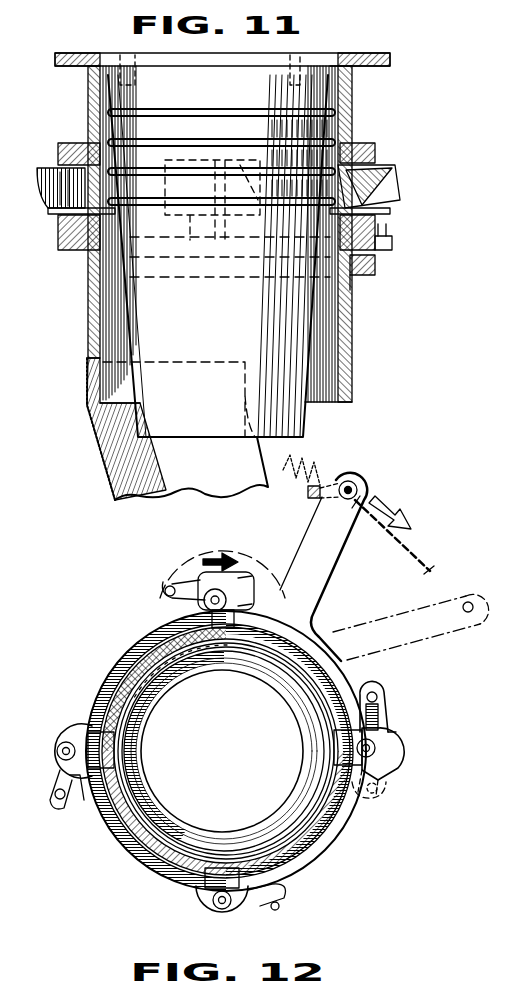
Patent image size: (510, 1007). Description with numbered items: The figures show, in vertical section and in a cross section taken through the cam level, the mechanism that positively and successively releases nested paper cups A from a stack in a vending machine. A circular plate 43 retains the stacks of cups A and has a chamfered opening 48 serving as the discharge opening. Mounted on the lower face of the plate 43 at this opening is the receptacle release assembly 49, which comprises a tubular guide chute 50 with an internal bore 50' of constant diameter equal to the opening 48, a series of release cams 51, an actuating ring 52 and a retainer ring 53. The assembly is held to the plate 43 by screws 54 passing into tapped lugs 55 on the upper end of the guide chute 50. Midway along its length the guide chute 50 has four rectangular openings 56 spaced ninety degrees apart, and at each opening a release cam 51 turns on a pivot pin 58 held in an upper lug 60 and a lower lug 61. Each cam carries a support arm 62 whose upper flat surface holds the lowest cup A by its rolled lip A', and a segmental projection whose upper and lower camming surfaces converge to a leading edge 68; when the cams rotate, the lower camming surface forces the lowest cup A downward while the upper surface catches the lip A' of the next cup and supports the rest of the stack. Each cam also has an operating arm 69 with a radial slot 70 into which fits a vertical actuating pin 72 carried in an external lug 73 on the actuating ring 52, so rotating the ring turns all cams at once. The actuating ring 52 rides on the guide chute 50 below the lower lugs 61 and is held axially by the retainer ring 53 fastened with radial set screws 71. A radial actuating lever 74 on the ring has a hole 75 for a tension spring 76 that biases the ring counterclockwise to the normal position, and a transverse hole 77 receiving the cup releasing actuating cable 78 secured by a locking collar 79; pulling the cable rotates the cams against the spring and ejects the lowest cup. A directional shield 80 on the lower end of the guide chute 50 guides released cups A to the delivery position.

In FIG. 11, the circular plate 43 is at (370, 53).
In FIG. 11, the chamfered opening 48 is at (345, 53).
In FIG. 11, the receptacle release assembly 49 is at (362, 112).
In FIG. 12, the receptacle release assembly 49 is at (114, 662).
In FIG. 11, the tubular guide chute 50 is at (366, 354).
In FIG. 11, the internal bore 50' is at (366, 377).
In FIG. 11, the release cam 51 is at (47, 165).
In FIG. 12, the release cam 51 is at (66, 724).
In FIG. 11, the actuating ring 52 is at (395, 248).
In FIG. 12, the actuating ring 52 is at (326, 632).
In FIG. 11, the retainer ring 53 is at (378, 263).
In FIG. 11, the screws 54 is at (302, 55).
In FIG. 11, the lugs 55 is at (142, 72).
In FIG. 11, the rectangular openings 56 is at (252, 236).
In FIG. 12, the rectangular openings 56 is at (104, 708).
In FIG. 12, the pivot pin 58 is at (392, 768).
In FIG. 11, the upper lug 60 is at (78, 143).
In FIG. 11, the lower lug 61 is at (60, 241).
In FIG. 12, the support arm 62 is at (222, 868).
In FIG. 11, the leading edge 68 is at (360, 147).
In FIG. 12, the operating arm 69 is at (387, 702).
In FIG. 12, the radial slot 70 is at (382, 720).
In FIG. 11, the set screws 71 is at (357, 282).
In FIG. 12, the actuating pin 72 is at (163, 584).
In FIG. 12, the external lug 73 is at (158, 602).
In FIG. 12, the actuating lever 74 is at (333, 579).
In FIG. 12, the hole 75 is at (356, 482).
In FIG. 12, the tension spring 76 is at (306, 462).
In FIG. 12, the transverse hole 77 is at (358, 491).
In FIG. 12, the cup releasing actuating cable 78 is at (400, 558).
In FIG. 12, the locking collar 79 is at (313, 500).
In FIG. 11, the directional shield 80 is at (112, 476).
In FIG. 11, the paper cup A is at (216, 256).
In FIG. 12, the paper cup A is at (222, 751).
In FIG. 11, the cup lip A' is at (221, 147).
In FIG. 12, the cup lip A' is at (224, 751).